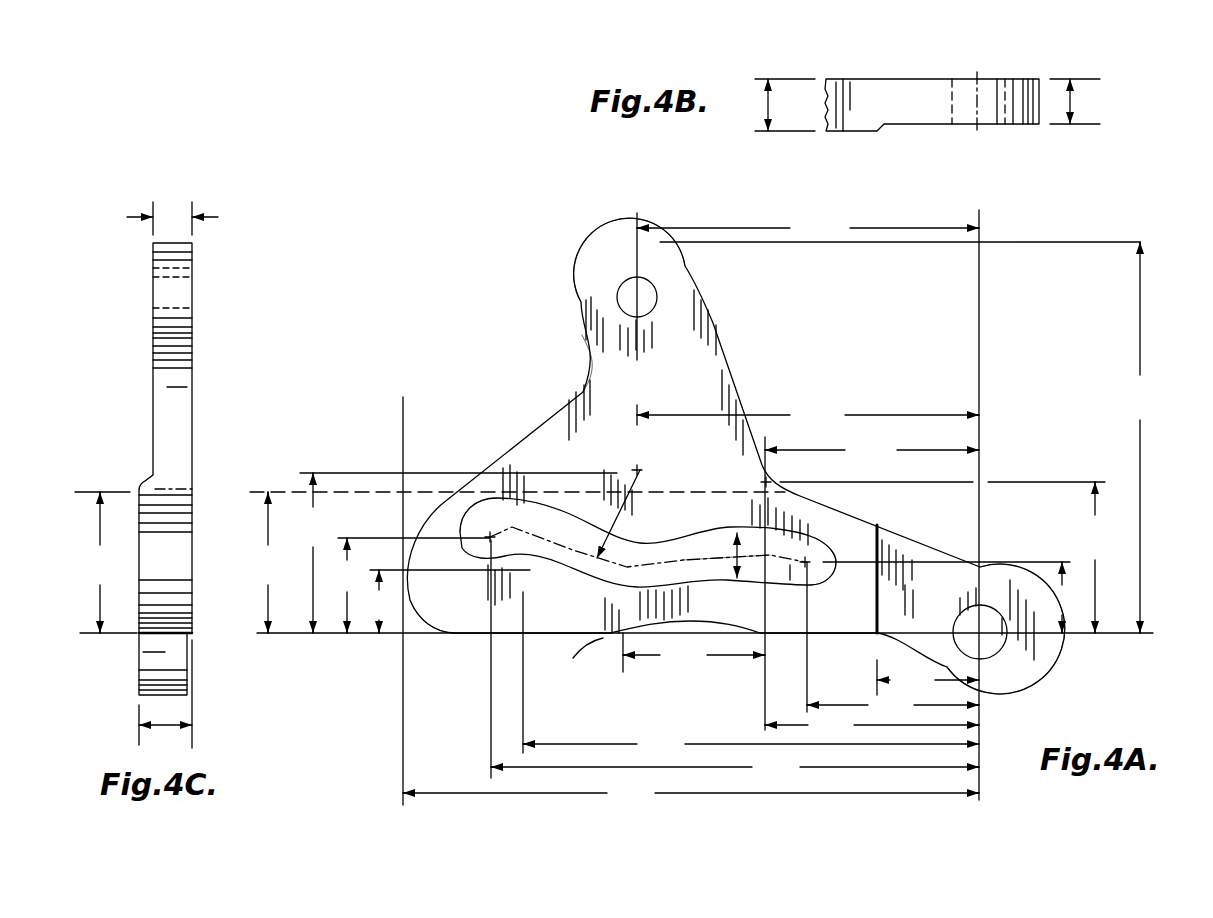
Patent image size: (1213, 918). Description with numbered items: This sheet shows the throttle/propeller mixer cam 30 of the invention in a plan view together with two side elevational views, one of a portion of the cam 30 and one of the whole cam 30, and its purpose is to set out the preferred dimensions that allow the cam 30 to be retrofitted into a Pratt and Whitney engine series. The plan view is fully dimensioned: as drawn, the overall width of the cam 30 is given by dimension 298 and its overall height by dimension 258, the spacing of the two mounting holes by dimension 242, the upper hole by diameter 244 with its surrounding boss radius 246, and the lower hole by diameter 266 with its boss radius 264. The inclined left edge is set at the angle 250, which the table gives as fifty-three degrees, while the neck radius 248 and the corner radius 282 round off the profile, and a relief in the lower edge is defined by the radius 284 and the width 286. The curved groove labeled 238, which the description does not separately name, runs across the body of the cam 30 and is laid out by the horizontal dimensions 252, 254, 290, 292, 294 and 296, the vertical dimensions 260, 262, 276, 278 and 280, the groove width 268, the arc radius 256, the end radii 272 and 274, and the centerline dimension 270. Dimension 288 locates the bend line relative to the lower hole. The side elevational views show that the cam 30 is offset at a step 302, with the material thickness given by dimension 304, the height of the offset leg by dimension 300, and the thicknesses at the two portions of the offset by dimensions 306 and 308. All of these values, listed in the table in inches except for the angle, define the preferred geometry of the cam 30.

In FIG. 4A, the throttle/propeller mixer cam 30 is at (747, 380).
In FIG. 4B, the throttle/propeller mixer cam 30 is at (998, 133).
In FIG. 4C, the throttle/propeller mixer cam 30 is at (212, 387).
In FIG. 4A, the curved slot 238 is at (547, 530).
In FIG. 4A, the cam dimension 242 is at (808, 505).
In FIG. 4A, the cam dimension 244 is at (651, 311).
In FIG. 4A, the cam dimension 246 is at (666, 269).
In FIG. 4A, the cam dimension 248 is at (580, 387).
In FIG. 4A, the cam angle dimension 250 is at (495, 463).
In FIG. 4A, the cam dimension 252 is at (808, 414).
In FIG. 4A, the cam dimension 254 is at (872, 583).
In FIG. 4A, the cam dimension 256 is at (637, 470).
In FIG. 4A, the cam dimension 258 is at (907, 437).
In FIG. 4A, the cam dimension 260 is at (945, 557).
In FIG. 4A, the cam dimension 262 is at (951, 597).
In FIG. 4A, the cam dimension 264 is at (1023, 653).
In FIG. 4A, the cam dimension 266 is at (961, 613).
In FIG. 4A, the cam dimension 268 is at (737, 533).
In FIG. 4A, the cam dimension 270 is at (782, 560).
In FIG. 4A, the cam dimension 272 is at (810, 566).
In FIG. 4A, the cam dimension 274 is at (510, 530).
In FIG. 4A, the cam dimension 276 is at (455, 553).
In FIG. 4A, the cam dimension 278 is at (407, 585).
In FIG. 4A, the cam dimension 280 is at (445, 601).
In FIG. 4A, the cam dimension 282 is at (490, 538).
In FIG. 4A, the cam dimension 284 is at (638, 727).
In FIG. 4A, the cam dimension 286 is at (694, 652).
In FIG. 4A, the cam dimension 288 is at (928, 677).
In FIG. 4A, the cam dimension 290 is at (893, 639).
In FIG. 4A, the cam dimension 292 is at (872, 725).
In FIG. 4A, the cam dimension 294 is at (751, 673).
In FIG. 4A, the cam dimension 296 is at (735, 659).
In FIG. 4A, the cam dimension 298 is at (691, 793).
In FIG. 4A, the cam dimension 300 is at (698, 562).
In FIG. 4C, the cam dimension 300 is at (106, 562).
In FIG. 4B, the cam dimension 302 is at (880, 131).
In FIG. 4C, the cam dimension 302 is at (147, 478).
In FIG. 4C, the cam dimension 304 is at (148, 218).
In FIG. 4B, the cam dimension 306 is at (768, 79).
In FIG. 4C, the cam dimension 306 is at (139, 725).
In FIG. 4B, the cam dimension 308 is at (1070, 79).